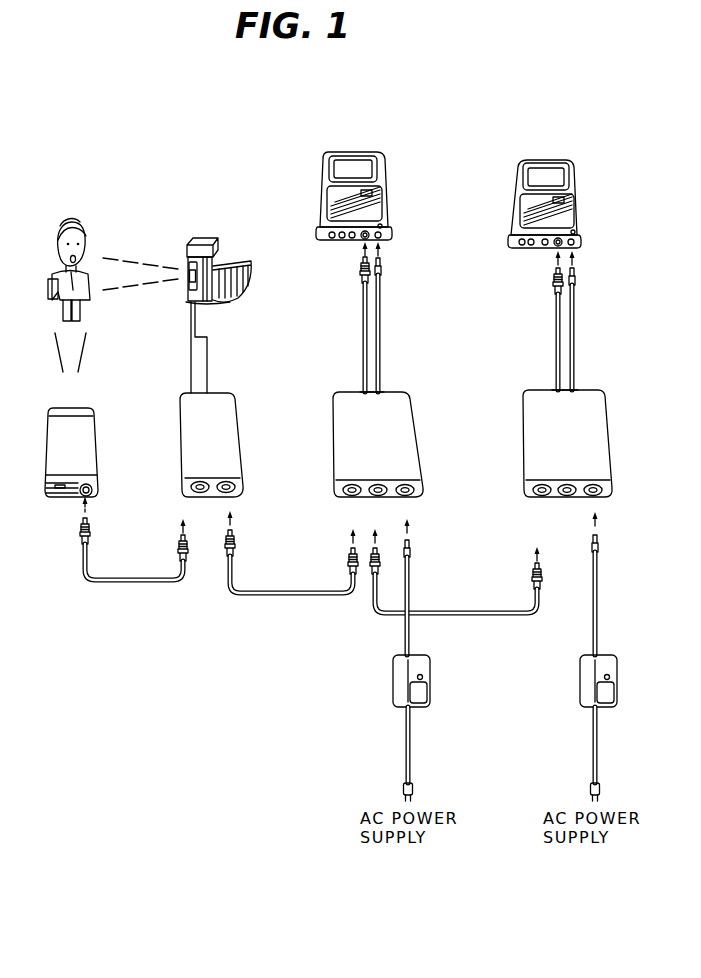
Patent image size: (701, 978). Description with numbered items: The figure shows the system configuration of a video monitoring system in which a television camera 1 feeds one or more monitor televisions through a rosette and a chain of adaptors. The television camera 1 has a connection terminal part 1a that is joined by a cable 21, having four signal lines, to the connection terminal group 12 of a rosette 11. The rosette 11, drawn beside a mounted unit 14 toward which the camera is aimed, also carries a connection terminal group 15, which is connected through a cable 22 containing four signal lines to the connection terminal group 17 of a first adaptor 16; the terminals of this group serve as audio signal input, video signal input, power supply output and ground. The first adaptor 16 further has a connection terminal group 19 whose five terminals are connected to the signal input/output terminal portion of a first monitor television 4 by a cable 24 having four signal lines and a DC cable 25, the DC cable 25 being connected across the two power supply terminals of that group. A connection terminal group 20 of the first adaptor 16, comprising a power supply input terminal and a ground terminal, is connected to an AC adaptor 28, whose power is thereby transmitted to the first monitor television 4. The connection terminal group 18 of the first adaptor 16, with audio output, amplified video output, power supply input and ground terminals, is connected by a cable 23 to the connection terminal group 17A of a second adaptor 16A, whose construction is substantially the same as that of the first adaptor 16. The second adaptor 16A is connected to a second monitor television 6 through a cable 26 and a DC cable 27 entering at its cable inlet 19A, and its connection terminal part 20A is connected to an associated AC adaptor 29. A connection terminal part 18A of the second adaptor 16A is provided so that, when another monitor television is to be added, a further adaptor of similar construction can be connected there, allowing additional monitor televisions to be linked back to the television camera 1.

The television camera 1 is at (89, 426).
The connection terminal part 1a is at (90, 500).
The first monitor television 4 is at (343, 152).
The second monitor television 6 is at (517, 195).
The rosette 11 is at (268, 410).
The connection terminal group 12 is at (197, 492).
The remote control signal receiver 14 is at (187, 266).
The connection terminal group 15 is at (233, 492).
The first adaptor 16 is at (409, 411).
The second adaptor 16A is at (540, 389).
The connection terminal group 17 is at (342, 498).
The connection terminal group 17A is at (534, 498).
The connection terminal group 18 is at (375, 498).
The connection terminal part 18A is at (563, 498).
The connection terminal group 19 is at (383, 388).
The second control unit cable inlet 19A is at (577, 388).
The connection terminal group 20 is at (407, 498).
The connection terminal part 20A is at (598, 498).
The cable 21 is at (140, 583).
The cable 22 is at (295, 598).
The cable 23 is at (473, 613).
The cable 24 is at (362, 321).
The DC cable 25 is at (381, 323).
The cable 26 is at (555, 320).
The DC cable 27 is at (575, 322).
The AC adaptor 28 is at (392, 672).
The AC adaptor 29 is at (579, 673).